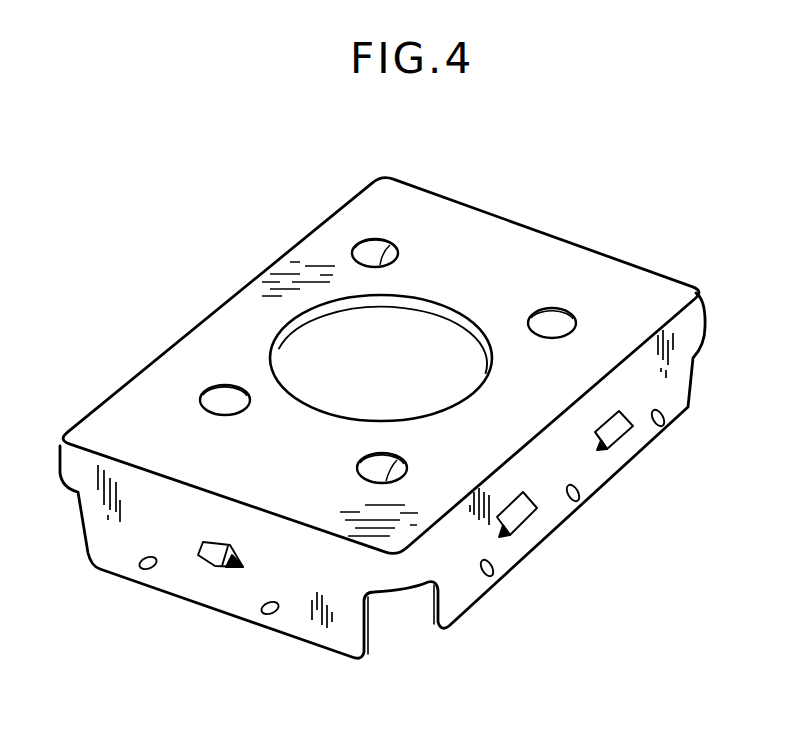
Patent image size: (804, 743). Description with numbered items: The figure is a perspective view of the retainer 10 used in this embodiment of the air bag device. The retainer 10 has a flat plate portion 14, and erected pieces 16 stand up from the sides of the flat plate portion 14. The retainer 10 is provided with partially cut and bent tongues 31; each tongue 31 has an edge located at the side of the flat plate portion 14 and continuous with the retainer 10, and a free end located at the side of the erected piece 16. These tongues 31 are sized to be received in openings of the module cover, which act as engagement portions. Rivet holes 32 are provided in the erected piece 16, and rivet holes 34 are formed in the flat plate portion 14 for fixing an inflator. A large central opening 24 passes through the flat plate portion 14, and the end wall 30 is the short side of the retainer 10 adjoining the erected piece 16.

The retainer 10 is at (549, 276).
The flat plate portion 14 is at (496, 226).
The erected piece 16 is at (200, 597).
The central opening 24 is at (332, 413).
The end wall 30 is at (670, 370).
The tongue 31 is at (232, 545).
The rivet hole 32 is at (140, 566).
The rivet hole 34 is at (399, 251).